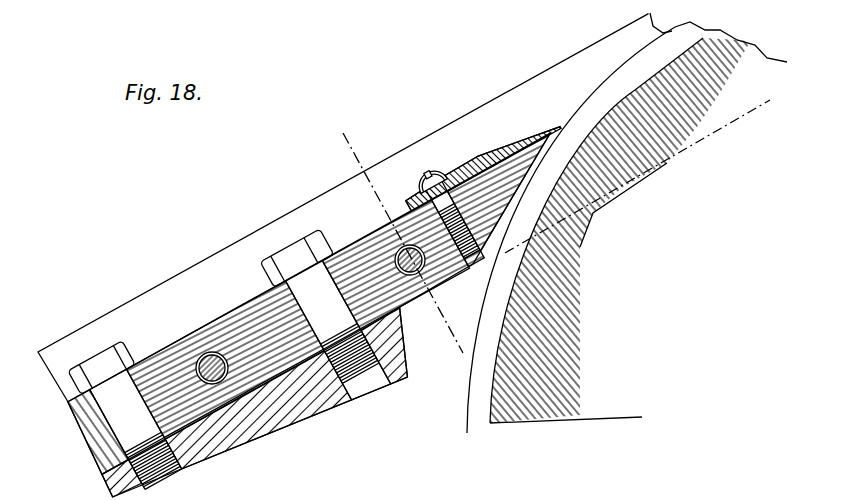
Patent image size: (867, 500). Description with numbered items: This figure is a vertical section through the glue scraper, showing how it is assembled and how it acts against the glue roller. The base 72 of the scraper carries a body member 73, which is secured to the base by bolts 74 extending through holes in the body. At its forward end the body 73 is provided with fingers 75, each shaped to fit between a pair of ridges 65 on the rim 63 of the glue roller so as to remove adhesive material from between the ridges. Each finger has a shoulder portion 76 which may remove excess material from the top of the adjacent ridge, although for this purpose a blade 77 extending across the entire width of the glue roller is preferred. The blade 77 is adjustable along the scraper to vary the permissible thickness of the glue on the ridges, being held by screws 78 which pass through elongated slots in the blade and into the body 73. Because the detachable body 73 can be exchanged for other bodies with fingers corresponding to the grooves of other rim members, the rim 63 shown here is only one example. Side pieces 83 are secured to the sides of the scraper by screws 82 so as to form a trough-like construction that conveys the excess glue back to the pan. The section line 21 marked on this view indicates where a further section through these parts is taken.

The section line 21 is at (397, 246).
The rim 63 is at (533, 414).
The ridges 65 is at (466, 410).
The base 72 is at (252, 447).
The body member 73 is at (260, 316).
The bolts 74 is at (94, 362).
The fingers 75 is at (662, 161).
The shoulder portion 76 is at (590, 212).
The blade 77 is at (528, 138).
The screws 78 is at (432, 168).
The screws 82 is at (402, 250).
The side pieces 83 is at (249, 234).